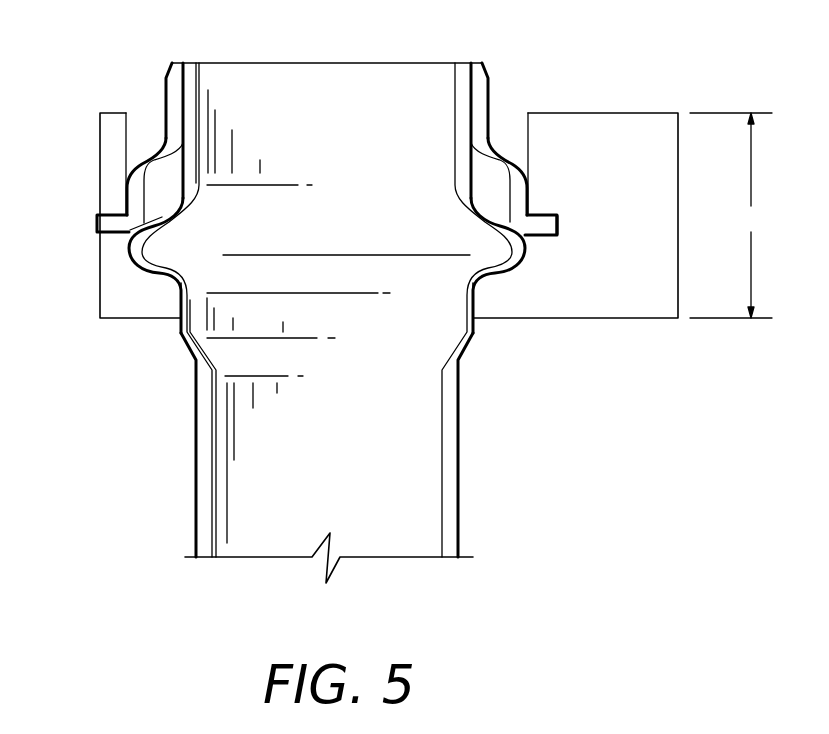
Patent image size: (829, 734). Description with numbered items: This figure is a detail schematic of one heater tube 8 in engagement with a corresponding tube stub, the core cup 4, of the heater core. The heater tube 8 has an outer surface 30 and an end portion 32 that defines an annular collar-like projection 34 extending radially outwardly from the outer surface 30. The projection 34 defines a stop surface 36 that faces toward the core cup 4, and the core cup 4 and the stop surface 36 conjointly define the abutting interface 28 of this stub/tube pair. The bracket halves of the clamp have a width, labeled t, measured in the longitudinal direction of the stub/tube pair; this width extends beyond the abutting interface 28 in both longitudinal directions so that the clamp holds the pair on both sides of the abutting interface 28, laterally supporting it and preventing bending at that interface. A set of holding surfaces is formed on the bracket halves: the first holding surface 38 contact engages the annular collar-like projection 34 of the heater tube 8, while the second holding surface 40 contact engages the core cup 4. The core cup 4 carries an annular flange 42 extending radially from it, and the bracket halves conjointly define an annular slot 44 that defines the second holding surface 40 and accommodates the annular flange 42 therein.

The core cup 4 is at (166, 74).
The heater tube 8 is at (197, 451).
The abutting interface 28 is at (163, 243).
The outer surface 30 is at (198, 528).
The end portion 32 is at (198, 112).
The annular collar-like projection 34 is at (132, 262).
The stop surface 36 is at (161, 217).
The first holding surface 38 is at (497, 278).
The second holding surface 40 is at (547, 214).
The annular flange 42 is at (537, 221).
The annular slot 44 is at (557, 225).